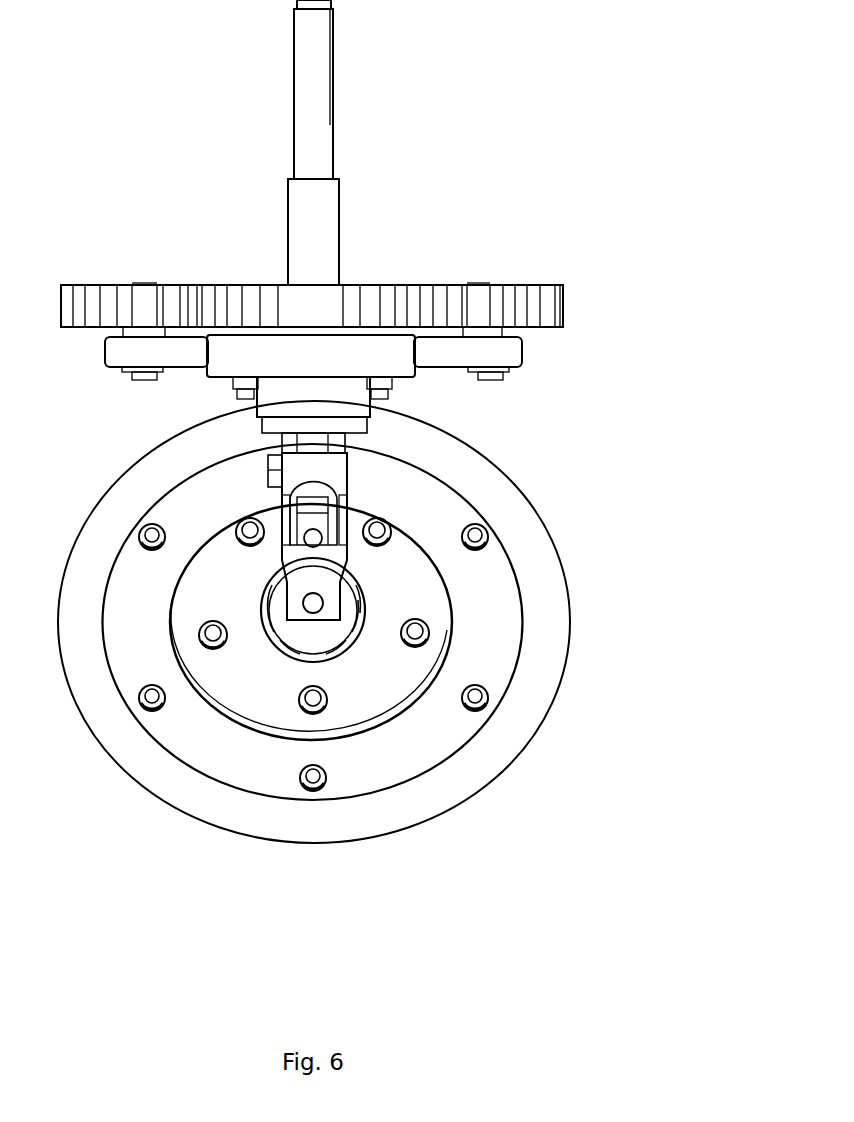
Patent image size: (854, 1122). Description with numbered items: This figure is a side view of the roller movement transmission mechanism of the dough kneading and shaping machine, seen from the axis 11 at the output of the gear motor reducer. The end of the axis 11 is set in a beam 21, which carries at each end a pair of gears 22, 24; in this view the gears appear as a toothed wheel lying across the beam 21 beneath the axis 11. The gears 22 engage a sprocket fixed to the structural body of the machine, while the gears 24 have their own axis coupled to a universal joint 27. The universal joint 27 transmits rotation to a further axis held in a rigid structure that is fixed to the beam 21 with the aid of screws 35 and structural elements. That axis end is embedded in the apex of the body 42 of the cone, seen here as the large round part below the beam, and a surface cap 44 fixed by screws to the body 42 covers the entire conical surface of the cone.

The axis 11 is at (312, 67).
The beam 21 is at (520, 360).
The gears 22 is at (563, 297).
The gears 24 is at (397, 303).
The universal joint 27 is at (315, 575).
The screws 35 is at (385, 607).
The body 42 is at (480, 655).
The surface cap 44 is at (513, 723).